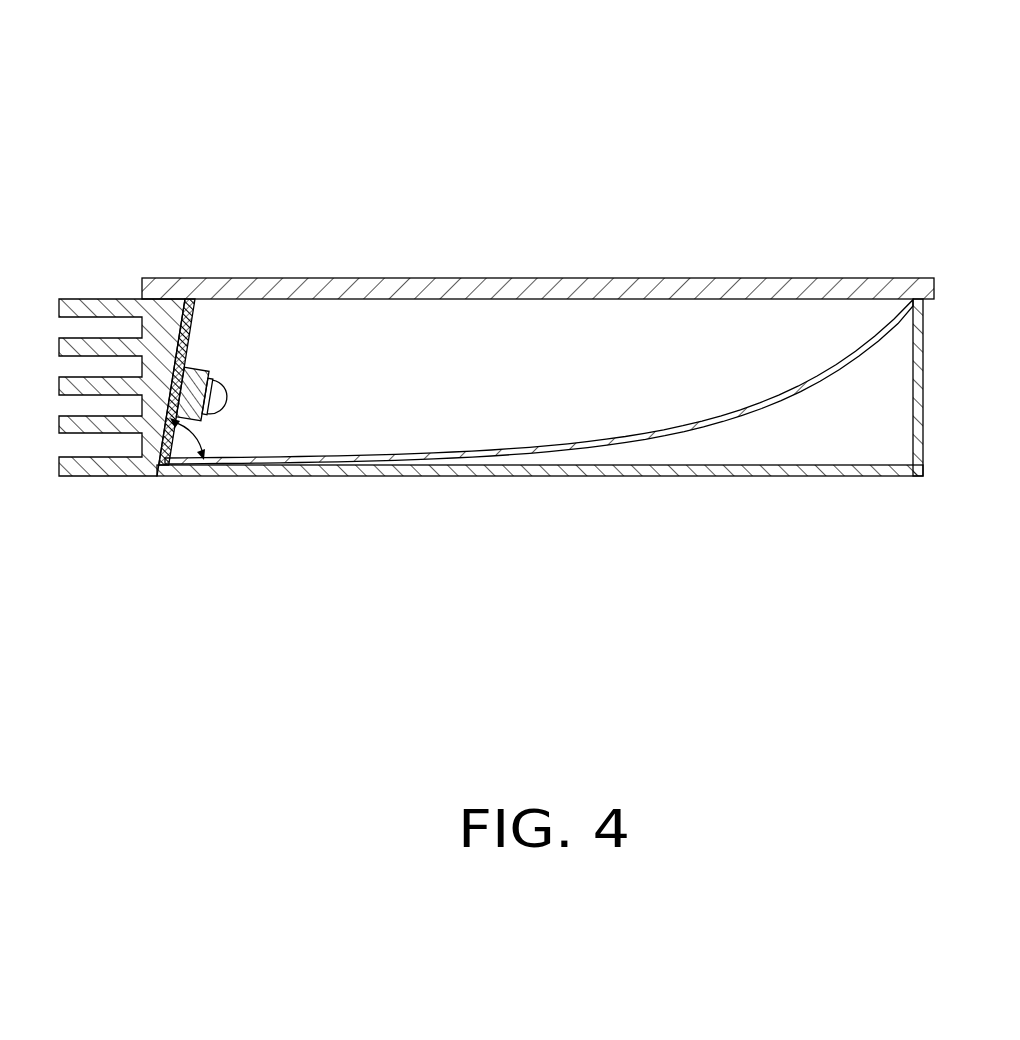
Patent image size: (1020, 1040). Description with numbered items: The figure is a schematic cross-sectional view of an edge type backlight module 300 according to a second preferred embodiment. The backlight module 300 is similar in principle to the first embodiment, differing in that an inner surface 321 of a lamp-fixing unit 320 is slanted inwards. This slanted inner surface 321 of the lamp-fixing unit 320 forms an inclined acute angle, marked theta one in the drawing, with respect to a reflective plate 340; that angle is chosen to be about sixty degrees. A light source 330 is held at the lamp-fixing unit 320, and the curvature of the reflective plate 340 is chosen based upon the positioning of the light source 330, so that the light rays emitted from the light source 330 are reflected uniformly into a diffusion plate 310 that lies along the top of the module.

The backlight module 300 is at (564, 109).
The diffusion plate 310 is at (857, 278).
The lamp-fixing unit 320 is at (95, 478).
The inner surface 321 is at (184, 463).
The light source 330 is at (218, 382).
The reflective plate 340 is at (630, 437).